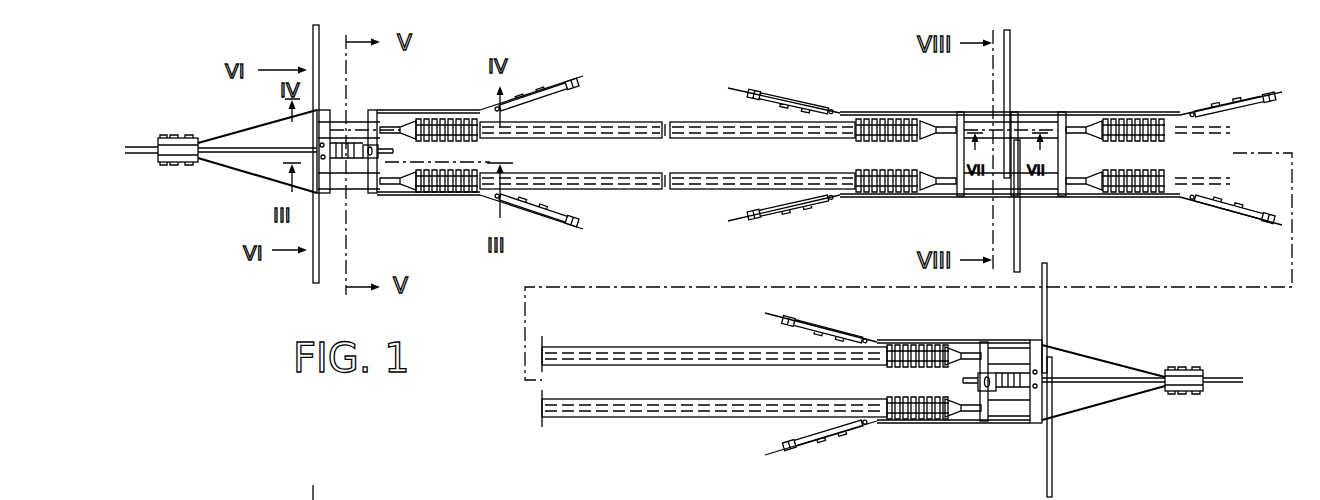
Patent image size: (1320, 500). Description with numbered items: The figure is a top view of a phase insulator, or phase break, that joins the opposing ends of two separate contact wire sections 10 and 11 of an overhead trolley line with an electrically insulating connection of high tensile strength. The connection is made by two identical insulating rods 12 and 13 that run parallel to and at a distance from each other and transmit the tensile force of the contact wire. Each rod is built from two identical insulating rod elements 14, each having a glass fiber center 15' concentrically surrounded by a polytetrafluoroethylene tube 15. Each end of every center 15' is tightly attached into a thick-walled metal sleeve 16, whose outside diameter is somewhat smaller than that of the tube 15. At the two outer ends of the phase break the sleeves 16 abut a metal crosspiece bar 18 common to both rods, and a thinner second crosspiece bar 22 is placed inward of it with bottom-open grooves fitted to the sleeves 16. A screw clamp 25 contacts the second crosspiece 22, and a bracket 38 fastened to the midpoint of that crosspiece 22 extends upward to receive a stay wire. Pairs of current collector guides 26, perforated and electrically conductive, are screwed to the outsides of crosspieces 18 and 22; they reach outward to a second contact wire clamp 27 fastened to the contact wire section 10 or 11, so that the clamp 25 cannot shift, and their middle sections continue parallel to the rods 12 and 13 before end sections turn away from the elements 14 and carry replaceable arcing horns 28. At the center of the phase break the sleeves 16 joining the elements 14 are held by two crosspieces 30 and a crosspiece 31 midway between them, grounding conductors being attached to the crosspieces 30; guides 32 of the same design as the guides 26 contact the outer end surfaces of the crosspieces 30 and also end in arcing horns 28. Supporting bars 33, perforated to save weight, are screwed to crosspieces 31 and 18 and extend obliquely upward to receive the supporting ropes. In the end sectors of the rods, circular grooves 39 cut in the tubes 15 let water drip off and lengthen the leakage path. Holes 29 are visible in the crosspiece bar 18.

The contact wire section 10 is at (150, 150).
The contact wire section 11 is at (1097, 384).
The insulating rod 12 is at (622, 110).
The insulating rod 13 is at (636, 200).
The insulating rod element 14 is at (606, 166).
The tube 15 is at (760, 272).
The center 15' is at (887, 269).
The sleeve 16 is at (353, 124).
The crosspiece bar 18 is at (324, 116).
The second crosspiece bar 22 is at (379, 193).
The screw clamp 25 is at (355, 150).
The current collector guide 26 is at (244, 123).
The second contact wire clamp 27 is at (182, 160).
The arcing horn 28 is at (580, 78).
The bolt hole 29 is at (318, 147).
The crosspiece 30 is at (960, 116).
The crosspiece 31 is at (1013, 118).
The guide 32 is at (843, 111).
The supporting bar 33 is at (312, 36).
The bracket 38 is at (395, 152).
The circular groove 39 is at (446, 119).